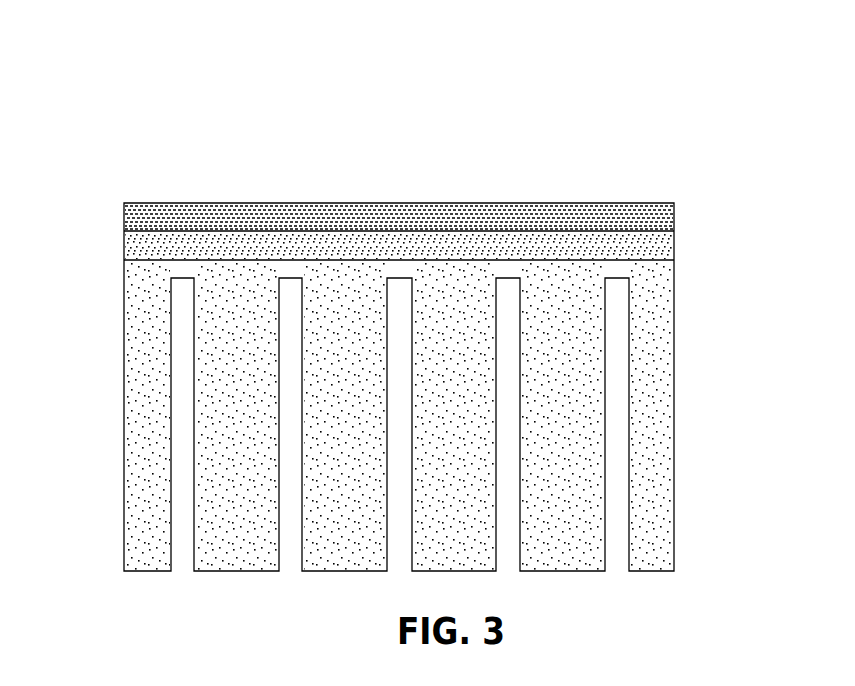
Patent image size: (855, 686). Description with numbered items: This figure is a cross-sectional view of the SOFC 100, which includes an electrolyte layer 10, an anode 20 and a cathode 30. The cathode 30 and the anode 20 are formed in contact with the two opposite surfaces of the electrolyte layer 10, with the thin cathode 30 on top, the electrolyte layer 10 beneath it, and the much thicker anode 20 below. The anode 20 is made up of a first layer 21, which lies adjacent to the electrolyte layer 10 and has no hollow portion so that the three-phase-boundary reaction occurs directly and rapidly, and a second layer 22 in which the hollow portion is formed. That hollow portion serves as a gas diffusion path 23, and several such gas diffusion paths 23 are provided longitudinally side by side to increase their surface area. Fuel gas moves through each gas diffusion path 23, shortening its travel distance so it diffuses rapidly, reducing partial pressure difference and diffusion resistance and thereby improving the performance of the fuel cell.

The SOFC 100 is at (225, 86).
The electrolyte layer 10 is at (130, 244).
The cathode 30 is at (561, 217).
The anode 20 is at (479, 411).
The first layer 21 is at (661, 269).
The second layer 22 is at (682, 571).
The gas diffusion path 23 is at (182, 465).